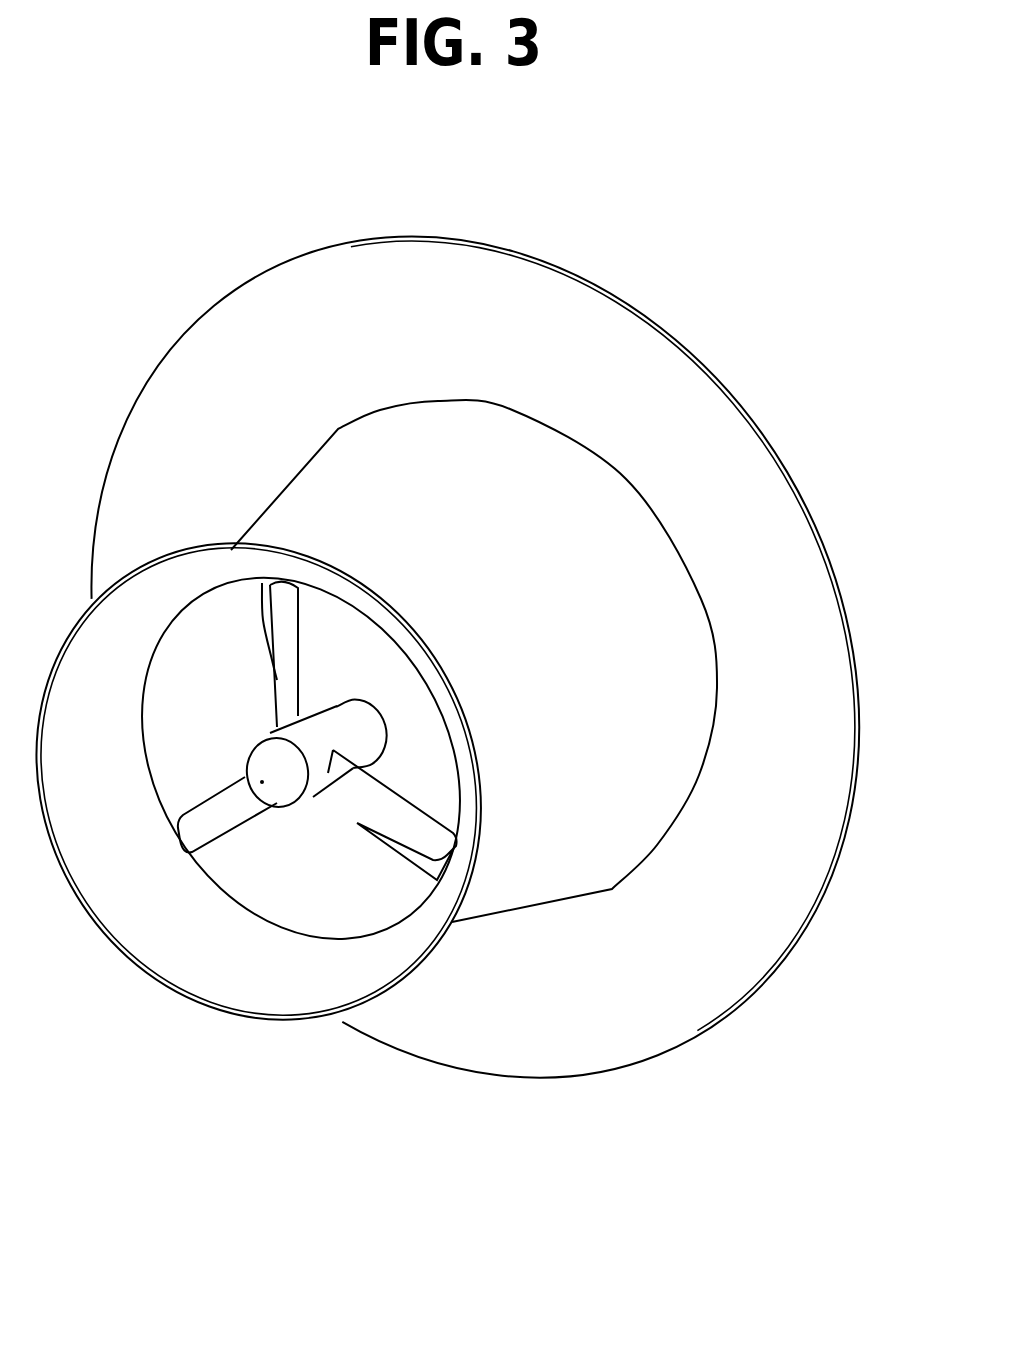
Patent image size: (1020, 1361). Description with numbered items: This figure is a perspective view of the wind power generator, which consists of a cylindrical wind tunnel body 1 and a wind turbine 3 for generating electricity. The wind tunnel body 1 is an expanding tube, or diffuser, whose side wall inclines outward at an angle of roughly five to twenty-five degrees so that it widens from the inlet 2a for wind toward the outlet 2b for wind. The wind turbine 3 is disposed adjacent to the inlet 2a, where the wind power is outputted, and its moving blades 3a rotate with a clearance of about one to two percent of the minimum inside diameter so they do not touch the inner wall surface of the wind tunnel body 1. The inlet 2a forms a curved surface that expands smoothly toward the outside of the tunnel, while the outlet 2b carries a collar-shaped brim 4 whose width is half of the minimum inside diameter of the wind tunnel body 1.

The wind tunnel body 1 is at (453, 672).
The inlet 2a is at (175, 925).
The outlet 2b is at (498, 614).
The wind turbine 3 is at (317, 887).
The moving blades 3a is at (230, 815).
The collar-shaped brim 4 is at (513, 253).